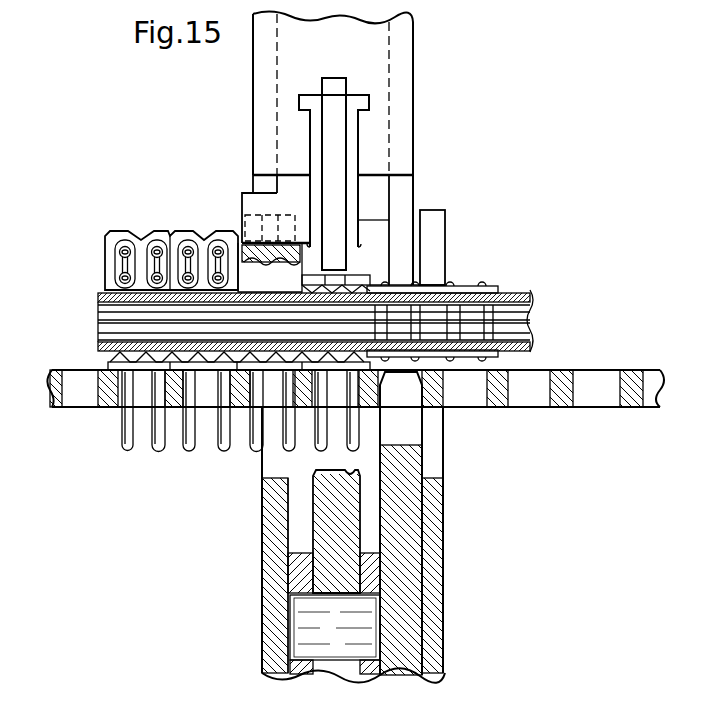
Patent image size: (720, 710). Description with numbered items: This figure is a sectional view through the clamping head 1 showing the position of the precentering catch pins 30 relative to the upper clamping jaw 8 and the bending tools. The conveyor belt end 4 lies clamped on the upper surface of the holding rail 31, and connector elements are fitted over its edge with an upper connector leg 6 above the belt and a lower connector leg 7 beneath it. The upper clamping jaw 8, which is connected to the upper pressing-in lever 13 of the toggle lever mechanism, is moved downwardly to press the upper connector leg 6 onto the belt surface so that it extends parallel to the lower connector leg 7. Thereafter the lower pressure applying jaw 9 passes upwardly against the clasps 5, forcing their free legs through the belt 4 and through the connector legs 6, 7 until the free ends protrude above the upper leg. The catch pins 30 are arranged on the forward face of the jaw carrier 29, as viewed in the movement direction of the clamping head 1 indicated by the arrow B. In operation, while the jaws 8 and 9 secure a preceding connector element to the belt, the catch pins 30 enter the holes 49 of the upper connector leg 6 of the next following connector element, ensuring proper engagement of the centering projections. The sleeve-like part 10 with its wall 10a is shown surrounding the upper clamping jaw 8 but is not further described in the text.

The clamping head 1 is at (432, 505).
The conveyor belt end 4 is at (513, 316).
The clasps 5 is at (125, 447).
The upper connector leg 6 is at (112, 246).
The lower connector leg 7 is at (112, 366).
The upper clamping jaw 8 is at (336, 88).
The lower pressure applying jaw 9 is at (320, 484).
The plunger sleeve 10 is at (355, 150).
The plunger sleeve wall 10a is at (318, 145).
The upper pressing-in lever 13 is at (402, 76).
The jaw carrier 29 is at (380, 198).
The catch pins 30 is at (285, 223).
The holding rail 31 is at (632, 378).
The holes 49 is at (274, 268).
The arrow indicating movement direction B is at (462, 222).